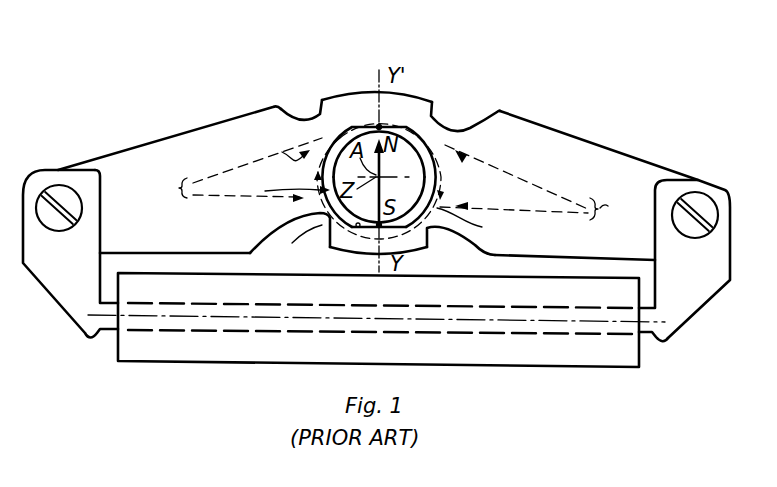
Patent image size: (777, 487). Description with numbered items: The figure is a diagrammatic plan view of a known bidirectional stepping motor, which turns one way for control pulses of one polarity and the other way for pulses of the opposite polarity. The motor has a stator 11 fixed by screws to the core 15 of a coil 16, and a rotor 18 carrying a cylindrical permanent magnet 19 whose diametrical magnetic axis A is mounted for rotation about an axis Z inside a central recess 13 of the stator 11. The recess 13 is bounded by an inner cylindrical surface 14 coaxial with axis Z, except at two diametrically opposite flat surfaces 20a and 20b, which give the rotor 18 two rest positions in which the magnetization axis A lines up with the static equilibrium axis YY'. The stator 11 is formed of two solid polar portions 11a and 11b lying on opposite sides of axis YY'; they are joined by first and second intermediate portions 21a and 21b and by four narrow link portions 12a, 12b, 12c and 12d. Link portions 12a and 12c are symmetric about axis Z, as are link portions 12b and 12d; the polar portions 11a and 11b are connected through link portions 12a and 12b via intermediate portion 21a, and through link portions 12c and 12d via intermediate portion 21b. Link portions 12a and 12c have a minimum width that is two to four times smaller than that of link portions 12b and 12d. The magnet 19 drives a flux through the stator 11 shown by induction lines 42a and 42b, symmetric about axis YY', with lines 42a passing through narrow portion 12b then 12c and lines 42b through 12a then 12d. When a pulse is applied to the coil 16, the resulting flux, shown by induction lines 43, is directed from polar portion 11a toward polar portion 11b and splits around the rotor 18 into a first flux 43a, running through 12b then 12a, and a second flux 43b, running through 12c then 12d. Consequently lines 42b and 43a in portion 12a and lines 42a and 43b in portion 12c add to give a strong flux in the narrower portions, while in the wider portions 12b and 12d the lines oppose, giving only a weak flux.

The stator 11 is at (627, 173).
The polar portion 11a is at (147, 160).
The polar portion 11b is at (598, 152).
The link portion 12a is at (452, 130).
The link portion 12b is at (285, 115).
The link portion 12c is at (300, 213).
The link portion 12d is at (428, 243).
The central recess 13 is at (472, 240).
The inner cylindrical surface 14 is at (472, 222).
The core 15 is at (668, 340).
The coil 16 is at (590, 348).
The rotor 18 is at (288, 199).
The cylindrical permanent magnet 19 is at (297, 242).
The flat surface 20a is at (357, 123).
The flat surface 20b is at (362, 228).
The first intermediate portion 21a is at (366, 122).
The second intermediate portion 21b is at (371, 243).
The induction lines 42a is at (282, 157).
The induction lines 42b is at (440, 181).
The induction lines 43 is at (389, 199).
The induction lines 43a is at (218, 176).
The induction lines 43b is at (213, 197).